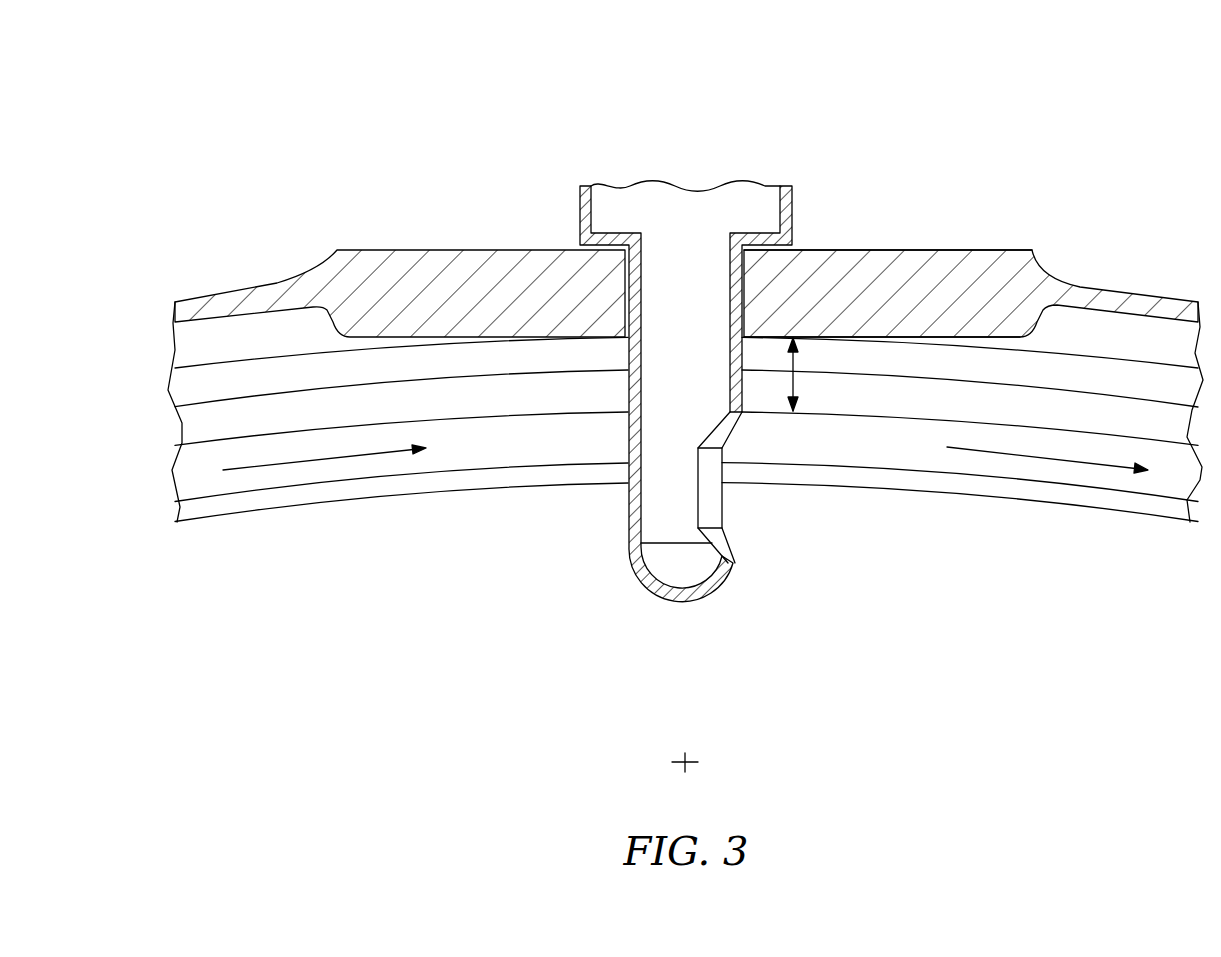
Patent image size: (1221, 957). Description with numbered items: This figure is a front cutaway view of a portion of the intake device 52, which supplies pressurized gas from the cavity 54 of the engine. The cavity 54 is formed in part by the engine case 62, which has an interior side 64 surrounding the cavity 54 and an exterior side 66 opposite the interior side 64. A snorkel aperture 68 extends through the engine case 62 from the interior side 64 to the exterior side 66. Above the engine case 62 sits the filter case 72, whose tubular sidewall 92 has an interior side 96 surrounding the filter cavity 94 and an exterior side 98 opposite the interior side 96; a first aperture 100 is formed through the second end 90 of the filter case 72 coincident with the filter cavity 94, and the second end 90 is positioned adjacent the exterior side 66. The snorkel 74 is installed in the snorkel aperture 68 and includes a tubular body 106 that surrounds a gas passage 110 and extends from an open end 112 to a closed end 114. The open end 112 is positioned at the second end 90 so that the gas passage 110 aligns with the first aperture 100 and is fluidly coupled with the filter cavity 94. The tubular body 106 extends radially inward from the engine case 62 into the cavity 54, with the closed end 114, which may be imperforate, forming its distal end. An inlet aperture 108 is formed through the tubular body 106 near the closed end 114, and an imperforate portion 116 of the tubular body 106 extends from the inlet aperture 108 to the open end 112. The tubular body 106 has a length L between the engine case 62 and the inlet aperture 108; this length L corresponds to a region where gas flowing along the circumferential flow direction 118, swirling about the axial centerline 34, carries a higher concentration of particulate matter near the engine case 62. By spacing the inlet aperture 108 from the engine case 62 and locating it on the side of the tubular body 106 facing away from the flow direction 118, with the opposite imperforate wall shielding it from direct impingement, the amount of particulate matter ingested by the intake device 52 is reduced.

The axial centerline 34 is at (688, 760).
The intake device 52 is at (685, 414).
The cavity 54 is at (848, 589).
The engine case 62 is at (685, 381).
The interior side 64 is at (910, 338).
The exterior side 66 is at (983, 250).
The snorkel aperture 68 is at (622, 286).
The filter case 72 is at (669, 380).
The snorkel 74 is at (755, 353).
The second end 90 is at (787, 260).
The tubular sidewall 92 is at (578, 198).
The filter cavity 94 is at (705, 196).
The interior side 96 is at (590, 207).
The exterior side 98 is at (580, 225).
The first aperture 100 is at (680, 232).
The tubular body 106 is at (620, 385).
The inlet aperture 108 is at (710, 505).
The gas passage 110 is at (705, 336).
The open end 112 is at (642, 245).
The closed end 114 is at (679, 603).
The imperforate portion 116 is at (633, 428).
The flow direction 118 is at (342, 457).
The length L is at (798, 381).